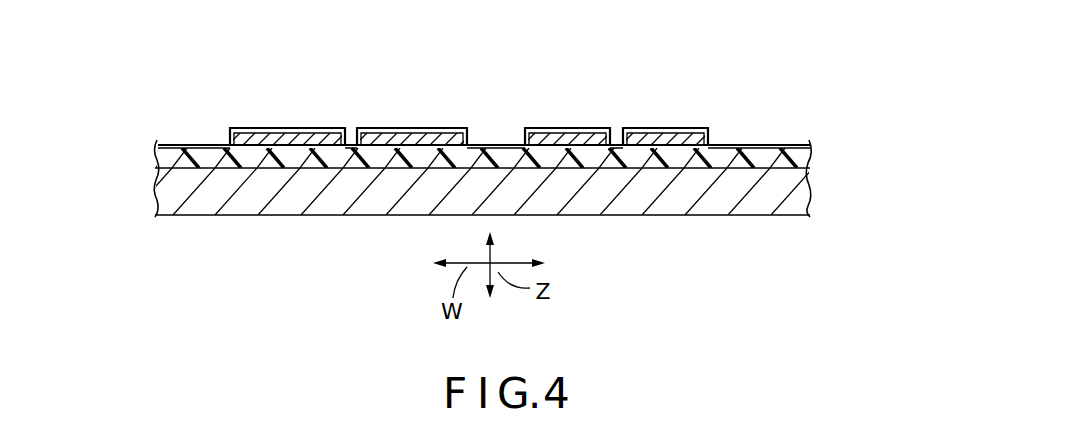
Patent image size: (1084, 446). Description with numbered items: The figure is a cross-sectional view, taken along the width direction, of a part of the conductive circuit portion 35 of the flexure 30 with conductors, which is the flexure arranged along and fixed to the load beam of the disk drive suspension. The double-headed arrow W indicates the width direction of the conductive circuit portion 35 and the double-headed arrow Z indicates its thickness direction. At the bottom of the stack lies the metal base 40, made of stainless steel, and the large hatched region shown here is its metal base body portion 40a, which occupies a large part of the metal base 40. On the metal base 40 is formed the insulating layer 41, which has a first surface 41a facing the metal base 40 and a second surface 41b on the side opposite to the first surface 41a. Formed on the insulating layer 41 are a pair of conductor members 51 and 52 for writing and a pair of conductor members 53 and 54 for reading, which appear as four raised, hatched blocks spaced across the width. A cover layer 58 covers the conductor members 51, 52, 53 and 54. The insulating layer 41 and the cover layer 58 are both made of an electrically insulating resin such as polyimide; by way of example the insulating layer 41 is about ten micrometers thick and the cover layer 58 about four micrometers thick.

The conductive circuit portion 35 is at (492, 144).
The flexure 30 is at (348, 226).
The metal base 40 is at (492, 209).
The metal base body portion 40a is at (275, 216).
The insulating layer 41 is at (489, 178).
The first surface 41a is at (778, 170).
The second surface 41b is at (792, 143).
The conductor member for writing 51 is at (270, 138).
The conductor member for writing 52 is at (410, 138).
The conductor member for reading 53 is at (565, 138).
The conductor member for reading 54 is at (672, 138).
The cover layer 58 is at (490, 147).